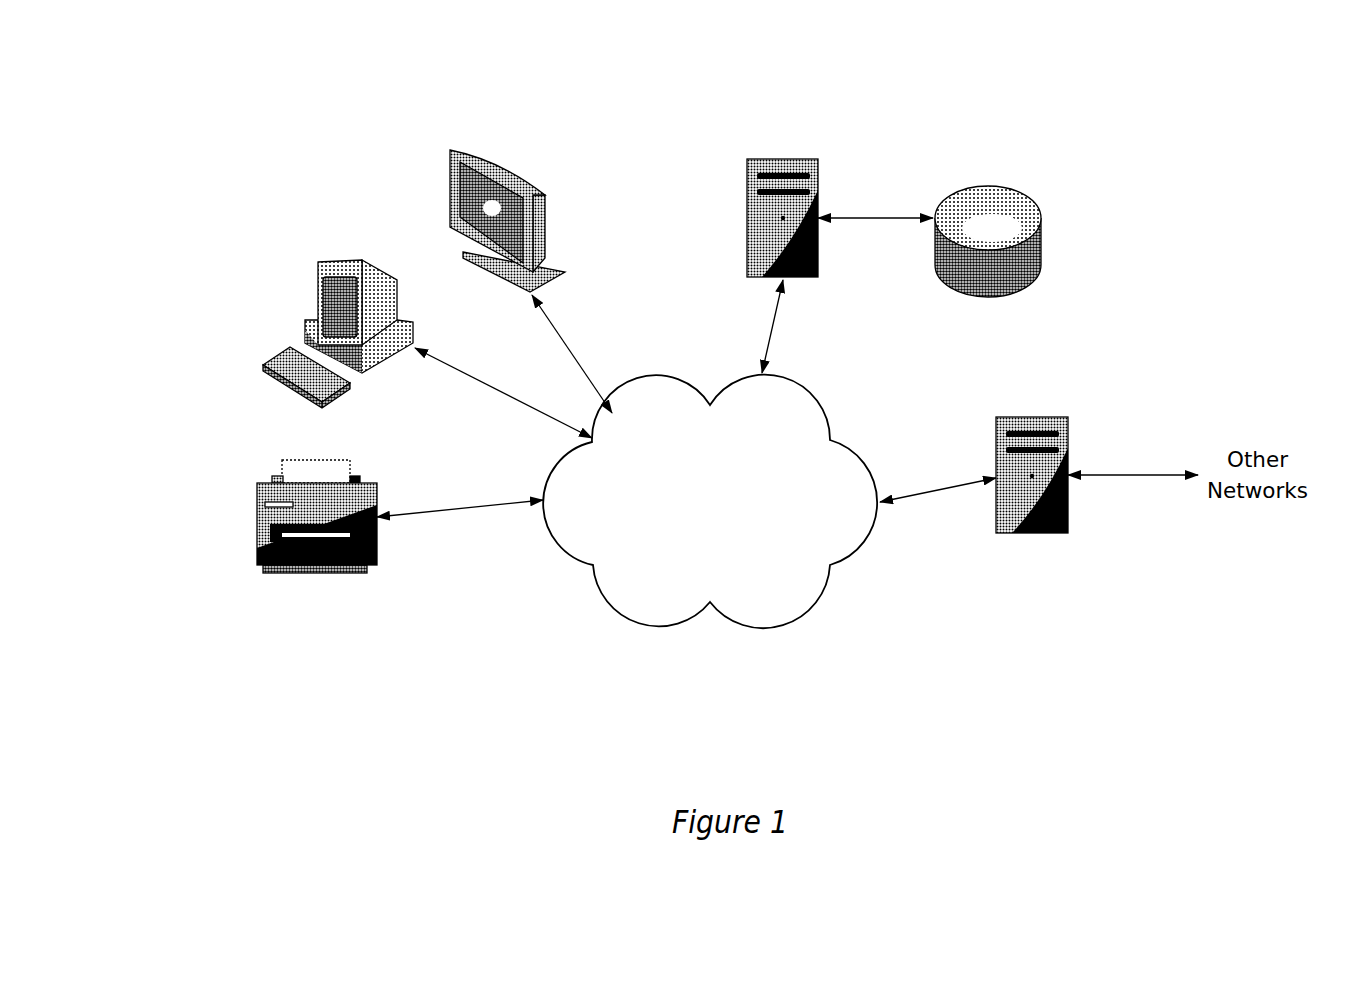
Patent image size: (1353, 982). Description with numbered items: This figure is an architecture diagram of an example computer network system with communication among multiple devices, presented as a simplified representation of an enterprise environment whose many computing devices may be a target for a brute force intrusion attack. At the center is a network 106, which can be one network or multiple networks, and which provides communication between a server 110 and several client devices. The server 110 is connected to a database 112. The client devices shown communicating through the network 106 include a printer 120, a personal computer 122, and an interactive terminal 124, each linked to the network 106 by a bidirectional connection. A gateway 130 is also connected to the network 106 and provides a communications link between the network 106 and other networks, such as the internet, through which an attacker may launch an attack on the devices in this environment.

The network 106 is at (730, 529).
The server 110 is at (785, 159).
The database 112 is at (1017, 188).
The printer 120 is at (257, 515).
The personal computer 122 is at (343, 260).
The interactive terminal 124 is at (547, 195).
The gateway 130 is at (1032, 417).